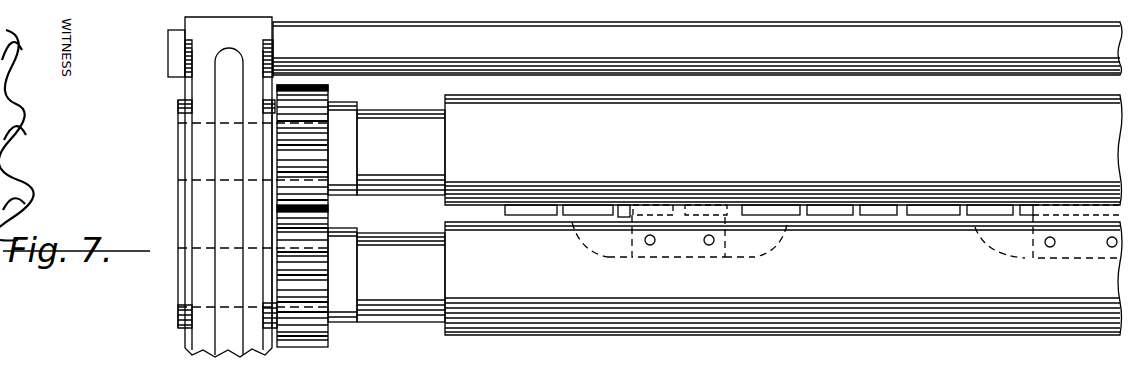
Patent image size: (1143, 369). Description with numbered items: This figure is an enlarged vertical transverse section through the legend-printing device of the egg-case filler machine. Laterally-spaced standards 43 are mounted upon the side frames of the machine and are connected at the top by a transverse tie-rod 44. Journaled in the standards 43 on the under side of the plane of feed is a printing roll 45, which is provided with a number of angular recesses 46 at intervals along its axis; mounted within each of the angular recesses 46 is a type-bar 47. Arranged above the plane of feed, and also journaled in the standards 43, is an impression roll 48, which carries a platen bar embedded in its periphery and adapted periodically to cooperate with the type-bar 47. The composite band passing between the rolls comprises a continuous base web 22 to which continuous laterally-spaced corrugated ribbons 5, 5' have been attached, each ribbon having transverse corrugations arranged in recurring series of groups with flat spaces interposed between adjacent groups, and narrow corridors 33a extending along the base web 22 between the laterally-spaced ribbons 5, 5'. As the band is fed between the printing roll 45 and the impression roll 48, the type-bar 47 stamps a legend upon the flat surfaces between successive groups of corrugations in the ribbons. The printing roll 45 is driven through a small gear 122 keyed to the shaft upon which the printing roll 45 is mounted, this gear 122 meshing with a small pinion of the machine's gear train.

The standards 43 is at (197, 112).
The transverse tie-rod 44 is at (697, 48).
The printing roll 45 is at (868, 345).
The angular recesses 46 is at (755, 257).
The type-bar 47 is at (690, 216).
The impression roll 48 is at (783, 150).
The corrugated ribbon 5 is at (814, 248).
The corrugated ribbon 5' is at (732, 207).
The base web 22 is at (882, 218).
The corridors 33a is at (963, 220).
The small gear 122 is at (316, 330).